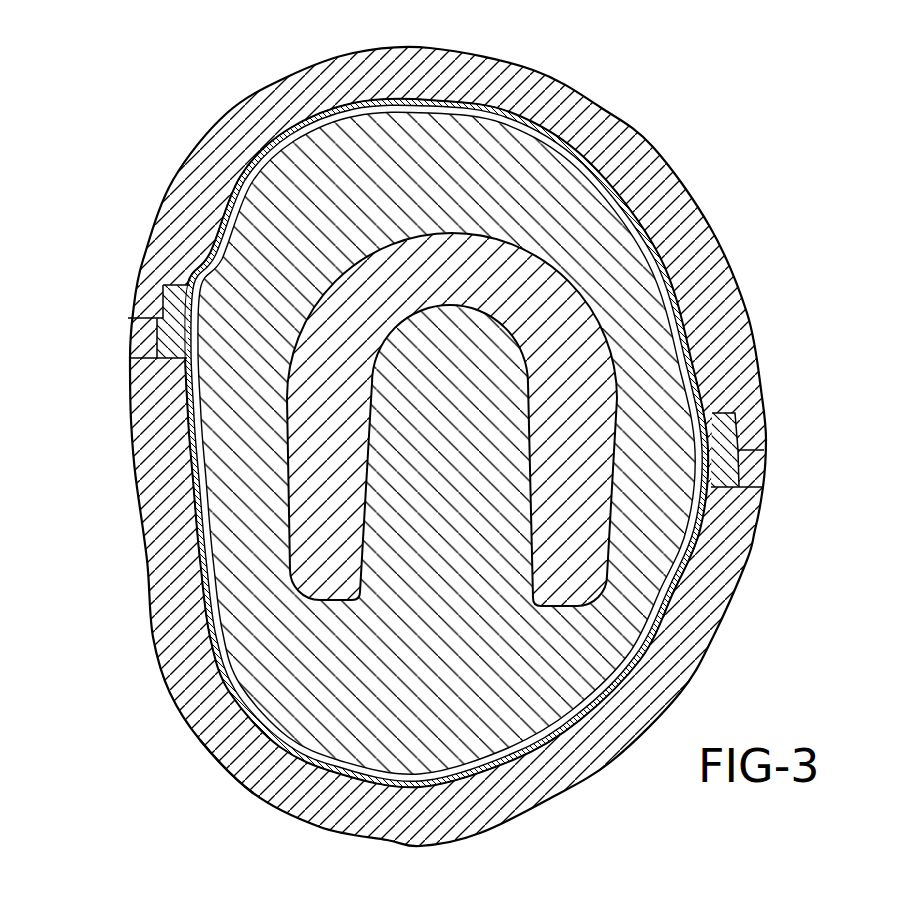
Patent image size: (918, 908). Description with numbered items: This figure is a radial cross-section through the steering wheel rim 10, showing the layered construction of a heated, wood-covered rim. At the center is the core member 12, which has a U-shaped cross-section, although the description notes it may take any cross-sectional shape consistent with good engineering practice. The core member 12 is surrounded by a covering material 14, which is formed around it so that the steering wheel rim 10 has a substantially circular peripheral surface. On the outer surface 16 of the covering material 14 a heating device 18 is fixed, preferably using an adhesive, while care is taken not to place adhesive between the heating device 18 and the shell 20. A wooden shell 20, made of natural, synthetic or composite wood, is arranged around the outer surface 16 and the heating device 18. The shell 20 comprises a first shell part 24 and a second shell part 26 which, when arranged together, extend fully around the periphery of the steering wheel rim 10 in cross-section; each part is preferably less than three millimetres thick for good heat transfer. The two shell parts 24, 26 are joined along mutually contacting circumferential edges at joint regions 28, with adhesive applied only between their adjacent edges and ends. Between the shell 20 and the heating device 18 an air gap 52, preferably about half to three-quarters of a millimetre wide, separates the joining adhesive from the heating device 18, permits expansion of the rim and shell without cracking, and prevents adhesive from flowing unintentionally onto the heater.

The steering wheel rim 10 is at (200, 247).
The core member 12 is at (570, 300).
The covering material 14 is at (262, 215).
The outer surface 16 is at (292, 142).
The heating device 18 is at (207, 527).
The wooden shell 20 is at (658, 140).
The first shell part 24 is at (478, 50).
The second shell part 26 is at (262, 793).
The joint regions 28 is at (126, 314).
The air gap 52 is at (553, 735).